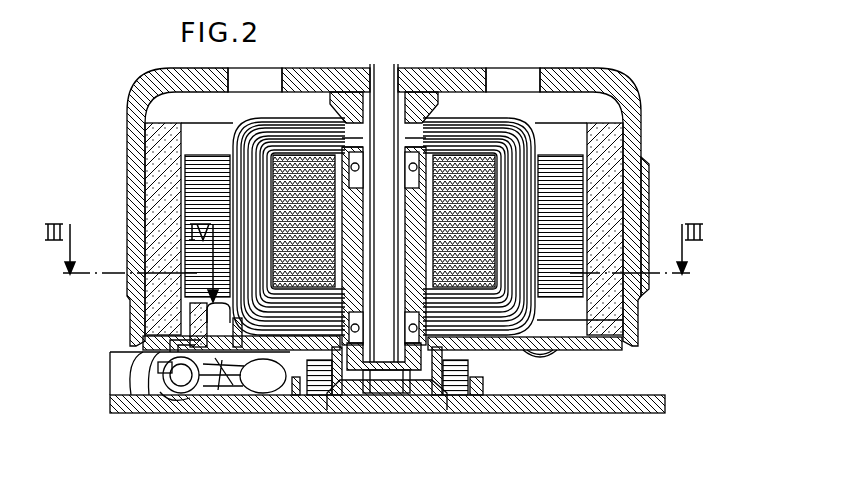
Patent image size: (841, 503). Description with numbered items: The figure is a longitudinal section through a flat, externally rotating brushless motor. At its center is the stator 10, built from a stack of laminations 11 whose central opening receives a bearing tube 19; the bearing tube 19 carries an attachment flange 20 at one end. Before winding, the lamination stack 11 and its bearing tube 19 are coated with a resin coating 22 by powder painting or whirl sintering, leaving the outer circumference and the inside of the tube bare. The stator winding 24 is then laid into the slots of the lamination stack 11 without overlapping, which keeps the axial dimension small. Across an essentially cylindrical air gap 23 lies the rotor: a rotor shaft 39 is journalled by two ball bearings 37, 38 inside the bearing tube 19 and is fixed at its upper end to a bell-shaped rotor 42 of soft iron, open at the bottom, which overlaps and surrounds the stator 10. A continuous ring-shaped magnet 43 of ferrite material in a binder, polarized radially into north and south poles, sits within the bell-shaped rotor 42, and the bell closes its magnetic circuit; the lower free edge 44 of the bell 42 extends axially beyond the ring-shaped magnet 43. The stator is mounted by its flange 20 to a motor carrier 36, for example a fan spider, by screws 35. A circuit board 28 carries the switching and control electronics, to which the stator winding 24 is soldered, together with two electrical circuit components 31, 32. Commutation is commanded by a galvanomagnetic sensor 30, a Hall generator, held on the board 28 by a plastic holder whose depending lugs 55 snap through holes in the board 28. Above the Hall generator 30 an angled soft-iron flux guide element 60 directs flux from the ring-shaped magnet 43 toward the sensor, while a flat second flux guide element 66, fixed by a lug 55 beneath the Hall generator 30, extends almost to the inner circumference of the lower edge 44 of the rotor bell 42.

The stator 10 is at (550, 138).
The stack of laminations 11 is at (311, 231).
The bearing tube 19 is at (322, 155).
The attachment flange 20 is at (300, 397).
The coating of resin 22 is at (480, 152).
The air gap 23 is at (145, 182).
The stator winding 24 is at (468, 122).
The circuit board 28 is at (512, 352).
The galvanomagnetic sensor 30 is at (236, 325).
The electrical circuit component 31 is at (190, 385).
The electrical circuit component 32 is at (243, 383).
The screw 35 is at (333, 400).
The motor carrier 36 is at (180, 400).
The ball bearing 37 is at (419, 147).
The ball bearing 38 is at (418, 347).
The rotor shaft 39 is at (393, 231).
The bell-shaped rotor 42 is at (636, 104).
The ring-shaped magnet 43 is at (613, 161).
The lower free edge 44 is at (636, 333).
The depending lug 55 is at (165, 378).
The flux guide element 60 is at (190, 302).
The second flux guide element 66 is at (180, 350).